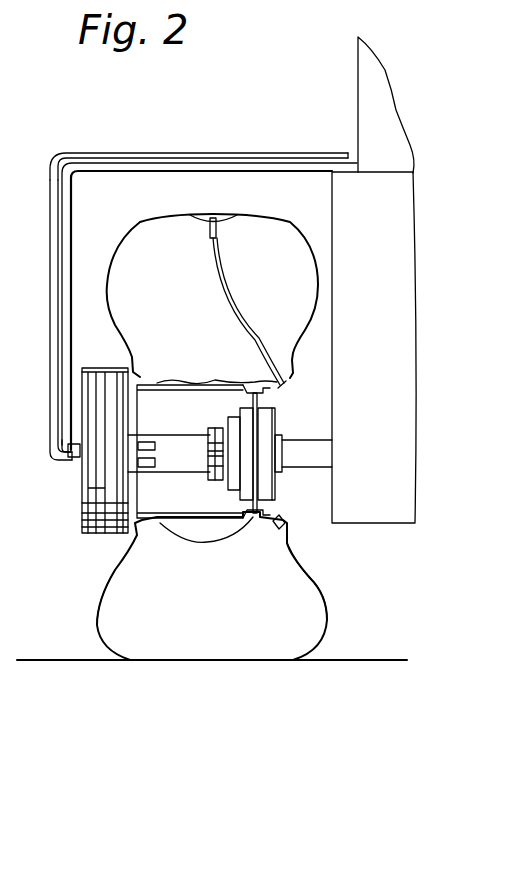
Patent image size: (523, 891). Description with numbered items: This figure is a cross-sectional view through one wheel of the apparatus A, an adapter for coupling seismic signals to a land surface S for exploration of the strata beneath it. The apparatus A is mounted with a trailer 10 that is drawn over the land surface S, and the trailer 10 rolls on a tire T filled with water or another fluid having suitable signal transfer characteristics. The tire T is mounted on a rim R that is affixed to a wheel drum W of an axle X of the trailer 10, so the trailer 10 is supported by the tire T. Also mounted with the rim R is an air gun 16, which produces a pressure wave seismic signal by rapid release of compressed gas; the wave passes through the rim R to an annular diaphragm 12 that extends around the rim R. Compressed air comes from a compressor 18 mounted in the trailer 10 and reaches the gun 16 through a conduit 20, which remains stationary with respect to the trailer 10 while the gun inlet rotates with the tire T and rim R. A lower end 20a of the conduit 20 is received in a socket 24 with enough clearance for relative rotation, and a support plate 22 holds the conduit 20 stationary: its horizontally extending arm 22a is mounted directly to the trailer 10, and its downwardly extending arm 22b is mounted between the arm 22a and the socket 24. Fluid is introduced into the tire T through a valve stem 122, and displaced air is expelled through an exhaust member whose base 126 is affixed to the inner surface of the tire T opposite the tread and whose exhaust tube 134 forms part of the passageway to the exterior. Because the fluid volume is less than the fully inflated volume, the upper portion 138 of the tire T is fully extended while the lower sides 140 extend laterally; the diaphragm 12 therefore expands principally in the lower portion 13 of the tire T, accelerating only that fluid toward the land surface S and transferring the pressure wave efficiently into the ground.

The trailer 10 is at (342, 198).
The diaphragm 12 is at (198, 540).
The lower portion of tire 13 is at (225, 638).
The air gun 16 is at (177, 442).
The compressor 18 is at (383, 115).
The conduit 20 is at (190, 162).
The lower end of conduit 20a is at (50, 462).
The support plate 22 is at (175, 278).
The horizontally extending arm 22a is at (258, 153).
The downwardly extending arm 22b is at (50, 255).
The socket 24 is at (72, 457).
The valve stem 122 is at (290, 517).
The base 126 is at (207, 223).
The exhaust tube 134 is at (225, 282).
The upper portion of tire 138 is at (318, 283).
The lower sides of tire 140 is at (95, 615).
The apparatus A is at (38, 234).
The rim R is at (195, 513).
The land surface S is at (338, 662).
The tire T is at (317, 585).
The wheel drum W is at (263, 398).
The axle X is at (305, 455).